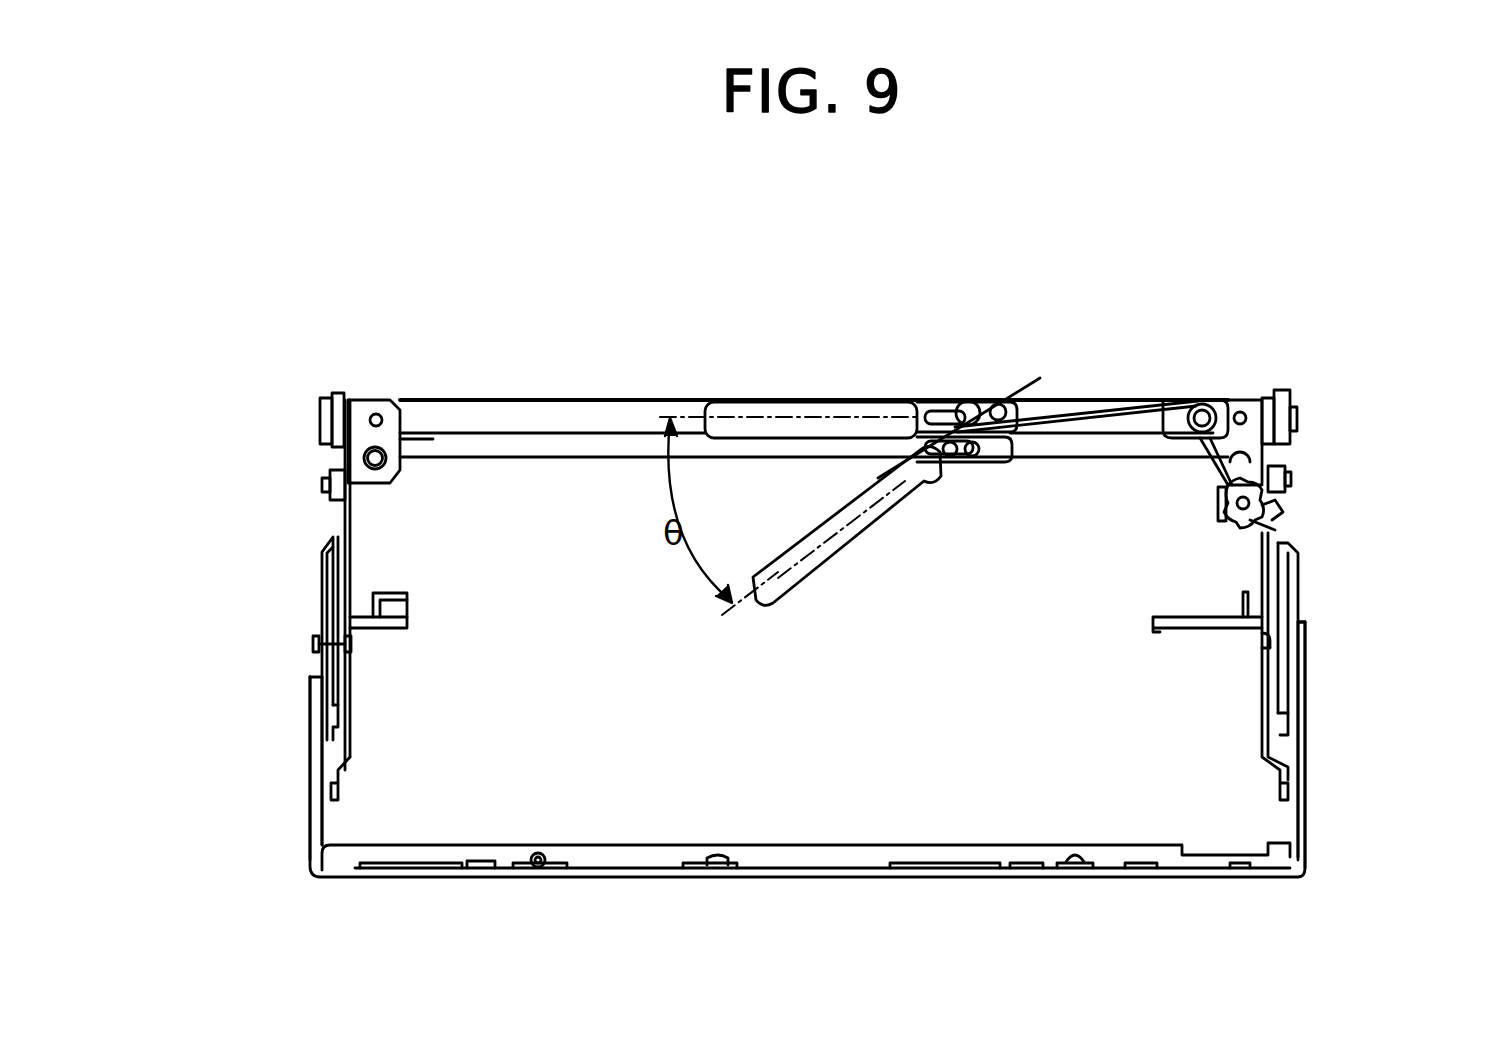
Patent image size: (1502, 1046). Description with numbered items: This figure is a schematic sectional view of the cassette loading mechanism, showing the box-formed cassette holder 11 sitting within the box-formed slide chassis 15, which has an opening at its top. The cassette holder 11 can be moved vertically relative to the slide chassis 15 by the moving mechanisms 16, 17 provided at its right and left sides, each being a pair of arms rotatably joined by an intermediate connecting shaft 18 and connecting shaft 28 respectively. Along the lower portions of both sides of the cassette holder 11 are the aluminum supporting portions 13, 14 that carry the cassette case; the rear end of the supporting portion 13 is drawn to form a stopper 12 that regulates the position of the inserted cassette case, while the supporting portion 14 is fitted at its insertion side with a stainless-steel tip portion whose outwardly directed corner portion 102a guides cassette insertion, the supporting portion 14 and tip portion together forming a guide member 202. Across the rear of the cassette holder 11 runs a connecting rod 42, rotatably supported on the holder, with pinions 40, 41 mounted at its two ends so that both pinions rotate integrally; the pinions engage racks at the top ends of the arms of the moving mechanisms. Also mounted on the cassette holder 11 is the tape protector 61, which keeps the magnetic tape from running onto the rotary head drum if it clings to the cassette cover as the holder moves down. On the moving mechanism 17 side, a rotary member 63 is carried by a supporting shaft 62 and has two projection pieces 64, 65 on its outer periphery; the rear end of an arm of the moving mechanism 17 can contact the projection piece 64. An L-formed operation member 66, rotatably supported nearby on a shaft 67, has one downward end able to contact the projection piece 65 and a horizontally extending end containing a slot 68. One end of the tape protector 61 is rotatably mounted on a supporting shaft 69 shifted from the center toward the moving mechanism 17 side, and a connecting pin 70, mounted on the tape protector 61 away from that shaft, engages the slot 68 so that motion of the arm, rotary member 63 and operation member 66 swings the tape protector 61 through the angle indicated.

The cassette holder 11 is at (345, 525).
The stopper 12 is at (396, 592).
The supporting portion 13 is at (388, 635).
The supporting portion 14 is at (1163, 633).
The slide chassis 15 is at (312, 765).
The moving mechanism 16 is at (312, 590).
The moving mechanism 17 is at (1315, 595).
The connecting shaft 18 is at (314, 645).
The connecting shaft 28 is at (1265, 638).
The pinion 40 is at (323, 398).
The pinion 41 is at (1285, 395).
The connecting rod 42 is at (472, 418).
The tape protector 61 is at (768, 410).
The supporting shaft 62 is at (1246, 500).
The rotary member 63 is at (1228, 518).
The projection piece 64 is at (1265, 508).
The projection piece 65 is at (1263, 473).
The operation member 66 is at (1178, 413).
The shaft 67 is at (930, 408).
The slot 68 is at (972, 458).
The supporting shaft 69 is at (985, 410).
The connecting pin 70 is at (948, 458).
The corner portion 102a is at (1183, 630).
The guide member 202 is at (1055, 655).